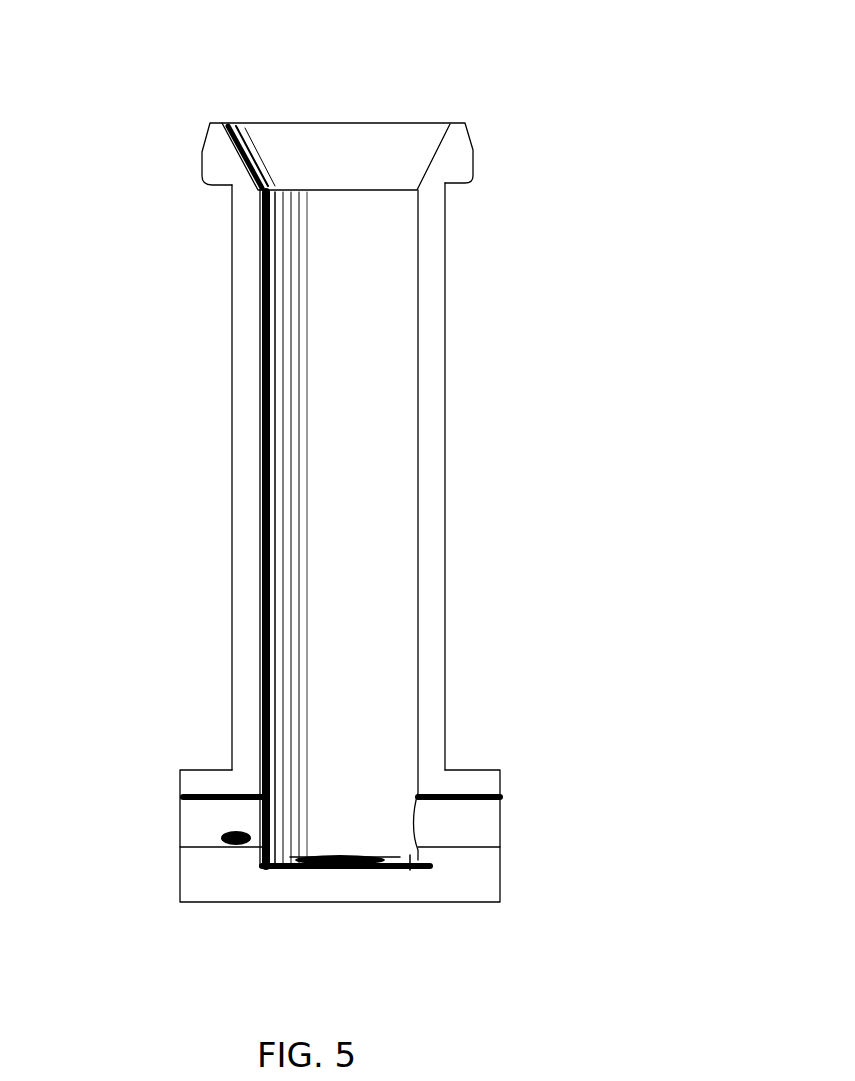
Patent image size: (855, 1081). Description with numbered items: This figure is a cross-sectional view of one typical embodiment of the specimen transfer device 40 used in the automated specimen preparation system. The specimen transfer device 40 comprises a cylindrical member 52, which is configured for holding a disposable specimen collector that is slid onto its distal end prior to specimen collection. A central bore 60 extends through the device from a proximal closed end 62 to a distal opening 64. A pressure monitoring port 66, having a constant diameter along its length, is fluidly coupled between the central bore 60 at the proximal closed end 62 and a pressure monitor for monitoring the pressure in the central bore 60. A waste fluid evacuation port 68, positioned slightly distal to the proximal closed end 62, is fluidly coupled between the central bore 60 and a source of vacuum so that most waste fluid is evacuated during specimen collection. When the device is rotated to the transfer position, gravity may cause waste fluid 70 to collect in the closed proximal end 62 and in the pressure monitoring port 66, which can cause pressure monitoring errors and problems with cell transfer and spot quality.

The specimen transfer device 40 is at (575, 308).
The cylindrical member 52 is at (435, 445).
The central bore 60 is at (385, 310).
The proximal closed end 62 is at (398, 847).
The distal opening 64 is at (432, 127).
The pressure monitoring port 66 is at (189, 828).
The waste fluid evacuation port 68 is at (465, 798).
The waste fluid 70 is at (225, 845).